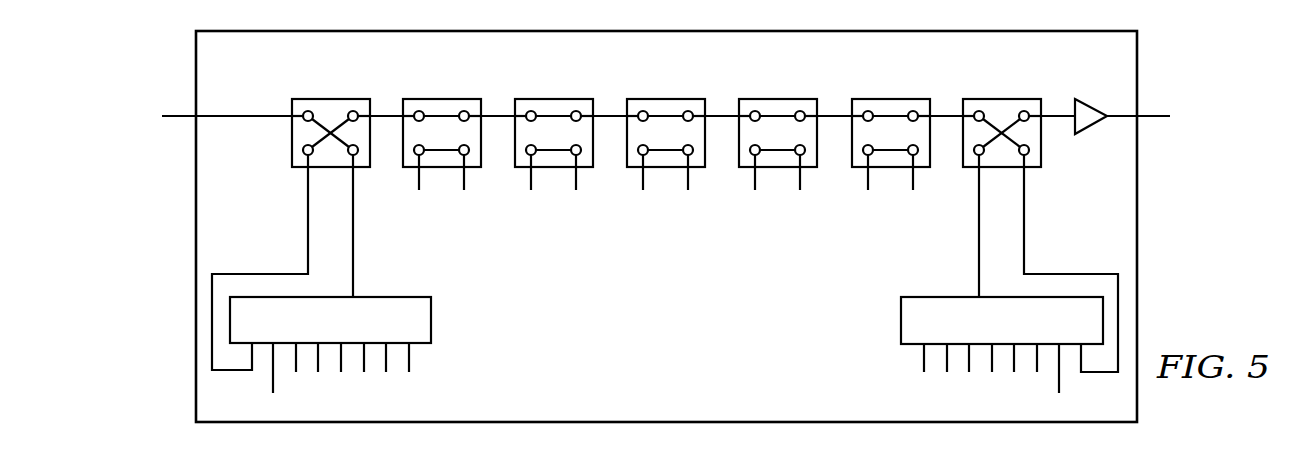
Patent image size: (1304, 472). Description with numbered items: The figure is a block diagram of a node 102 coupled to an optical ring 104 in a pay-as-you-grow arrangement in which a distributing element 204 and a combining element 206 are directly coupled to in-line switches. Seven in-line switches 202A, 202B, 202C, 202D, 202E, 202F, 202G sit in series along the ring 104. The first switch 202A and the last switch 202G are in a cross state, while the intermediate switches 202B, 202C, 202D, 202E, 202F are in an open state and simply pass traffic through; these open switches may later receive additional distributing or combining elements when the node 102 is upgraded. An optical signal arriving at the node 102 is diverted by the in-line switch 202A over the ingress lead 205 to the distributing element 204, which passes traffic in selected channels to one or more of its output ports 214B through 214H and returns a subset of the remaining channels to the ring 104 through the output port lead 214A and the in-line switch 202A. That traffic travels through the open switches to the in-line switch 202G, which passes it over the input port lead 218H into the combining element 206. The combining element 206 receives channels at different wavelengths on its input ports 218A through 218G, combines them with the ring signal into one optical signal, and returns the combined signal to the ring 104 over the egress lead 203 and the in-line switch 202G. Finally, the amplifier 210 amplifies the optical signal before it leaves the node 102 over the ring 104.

The node 102 is at (190, 310).
The ring 104 is at (1156, 116).
The in-line switch 202A is at (330, 99).
The in-line switch 202B is at (440, 99).
The in-line switch 202C is at (555, 99).
The in-line switch 202D is at (667, 99).
The in-line switch 202E is at (778, 99).
The in-line switch 202F is at (890, 99).
The in-line switch 202G is at (1003, 99).
The egress lead 203 is at (979, 223).
The distributing element 204 is at (350, 333).
The ingress lead 205 is at (353, 222).
The combining element 206 is at (1022, 333).
The amplifier 210 is at (1092, 105).
The output port lead 214A is at (308, 226).
The output port 214B is at (274, 378).
The output port 214H is at (410, 357).
The input port 218A is at (924, 355).
The input port 218G is at (1059, 380).
The input port lead 218H is at (1025, 225).